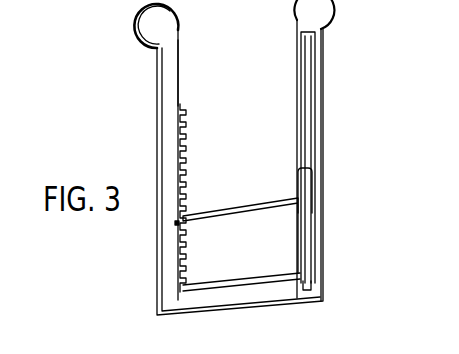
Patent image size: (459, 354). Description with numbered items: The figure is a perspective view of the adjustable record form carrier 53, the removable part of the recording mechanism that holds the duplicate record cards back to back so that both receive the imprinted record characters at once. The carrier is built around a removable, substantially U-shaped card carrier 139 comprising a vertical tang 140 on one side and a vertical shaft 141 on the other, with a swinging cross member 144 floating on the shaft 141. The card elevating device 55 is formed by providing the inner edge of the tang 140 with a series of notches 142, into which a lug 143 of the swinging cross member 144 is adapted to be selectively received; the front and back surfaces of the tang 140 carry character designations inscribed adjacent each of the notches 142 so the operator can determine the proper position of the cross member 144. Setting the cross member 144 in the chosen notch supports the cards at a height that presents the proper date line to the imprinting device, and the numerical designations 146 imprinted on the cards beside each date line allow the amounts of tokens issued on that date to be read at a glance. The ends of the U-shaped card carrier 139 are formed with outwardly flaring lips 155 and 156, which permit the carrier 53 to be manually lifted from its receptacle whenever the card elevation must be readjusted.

The record form carrier 53 is at (201, 77).
The card elevating device 55 is at (278, 191).
The U-shaped card carrier 139 is at (156, 93).
The vertical tang 140 is at (178, 59).
The vertical shaft 141 is at (300, 100).
The notches 142 is at (180, 223).
The lug 143 is at (185, 215).
The swinging cross member 144 is at (272, 203).
The numerical designations 146 is at (171, 220).
The outwardly flaring lip 155 is at (338, 11).
The outwardly flaring lip 156 is at (136, 24).